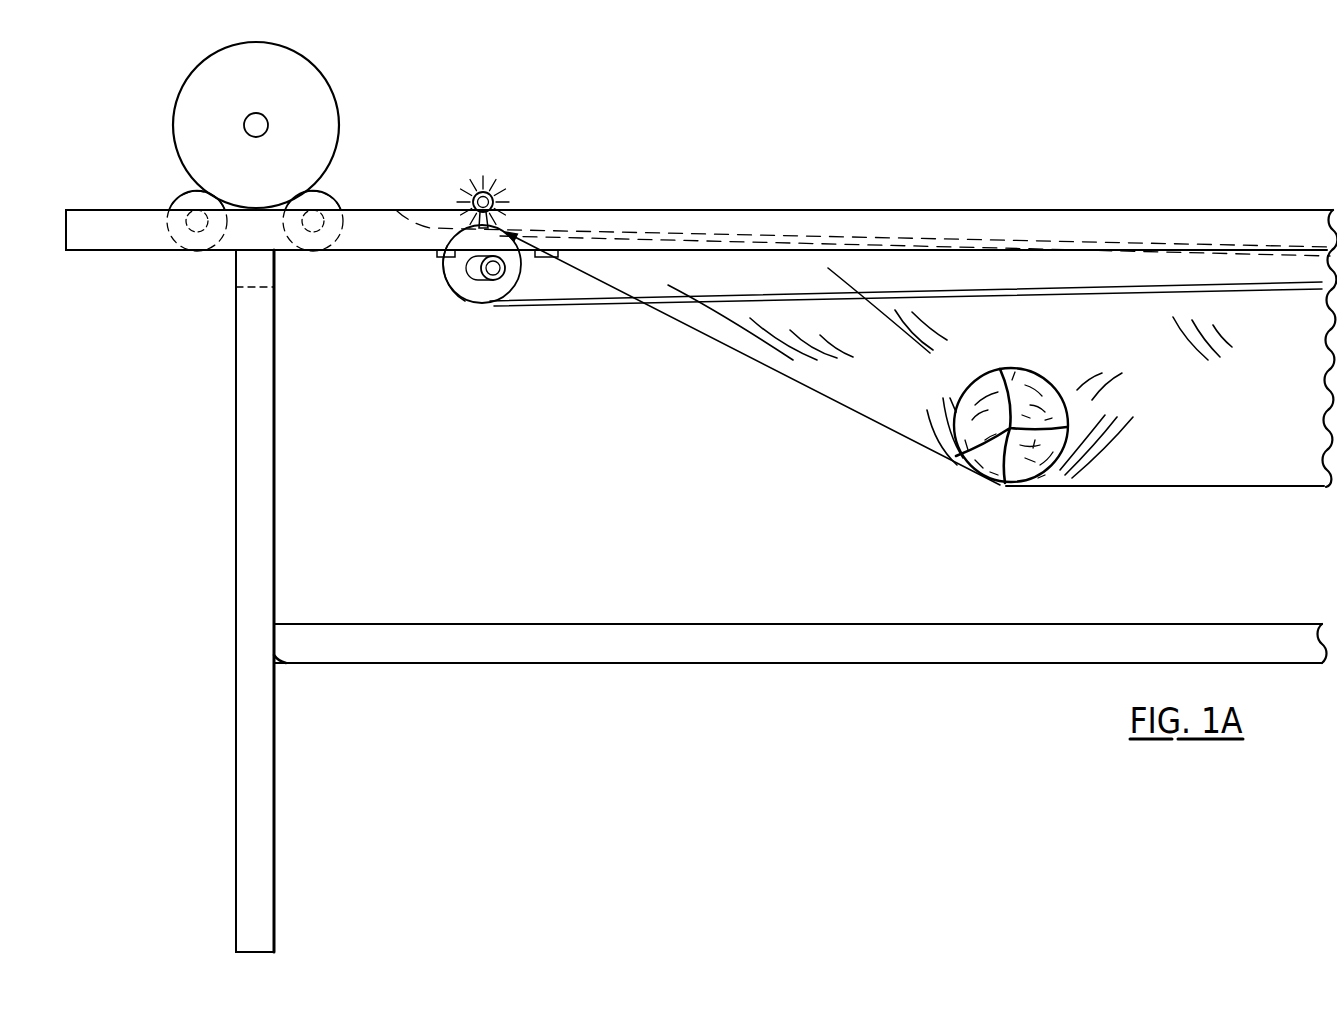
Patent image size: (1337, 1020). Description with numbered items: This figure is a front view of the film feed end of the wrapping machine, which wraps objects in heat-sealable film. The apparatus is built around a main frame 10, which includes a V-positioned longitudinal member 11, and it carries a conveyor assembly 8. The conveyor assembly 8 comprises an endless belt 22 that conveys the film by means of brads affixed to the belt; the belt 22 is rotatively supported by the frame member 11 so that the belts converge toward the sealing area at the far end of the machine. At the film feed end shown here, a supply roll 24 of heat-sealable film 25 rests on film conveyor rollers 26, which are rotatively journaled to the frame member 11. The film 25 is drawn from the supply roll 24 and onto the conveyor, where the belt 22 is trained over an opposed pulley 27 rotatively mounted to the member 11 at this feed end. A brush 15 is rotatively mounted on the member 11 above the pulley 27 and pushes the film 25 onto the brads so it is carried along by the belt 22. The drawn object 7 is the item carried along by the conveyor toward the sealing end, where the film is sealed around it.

The head of produce 7 is at (1028, 487).
The conveyor assembly 8 is at (579, 333).
The main frame 10 is at (297, 624).
The longitudinal member 11 is at (742, 210).
The brush 15 is at (493, 192).
The endless belt 22 is at (1036, 287).
The supply roll 24 is at (330, 92).
The heat-sealable film 25 is at (397, 211).
The film conveyor rollers 26 is at (337, 238).
The pulley 27 is at (466, 301).